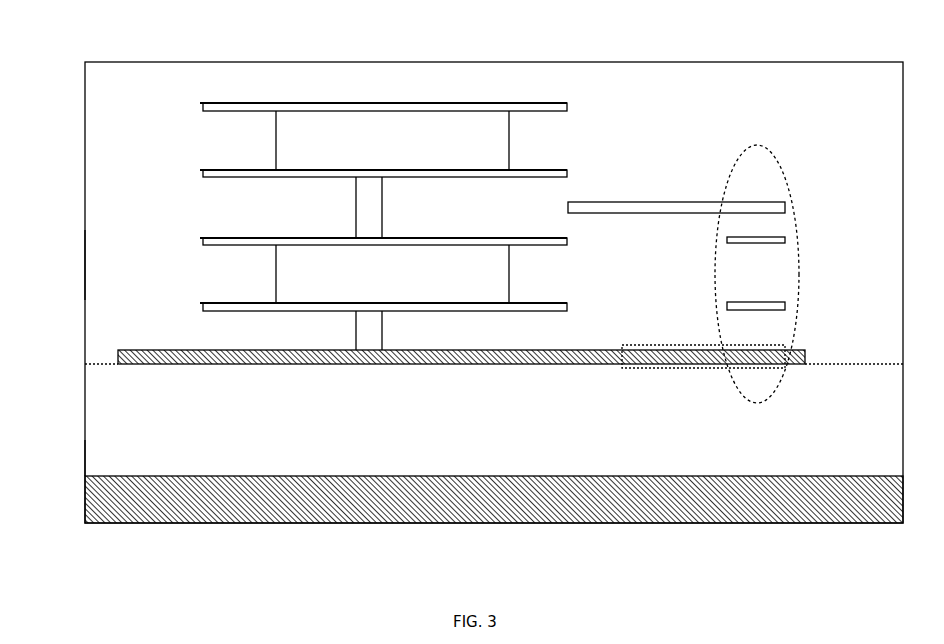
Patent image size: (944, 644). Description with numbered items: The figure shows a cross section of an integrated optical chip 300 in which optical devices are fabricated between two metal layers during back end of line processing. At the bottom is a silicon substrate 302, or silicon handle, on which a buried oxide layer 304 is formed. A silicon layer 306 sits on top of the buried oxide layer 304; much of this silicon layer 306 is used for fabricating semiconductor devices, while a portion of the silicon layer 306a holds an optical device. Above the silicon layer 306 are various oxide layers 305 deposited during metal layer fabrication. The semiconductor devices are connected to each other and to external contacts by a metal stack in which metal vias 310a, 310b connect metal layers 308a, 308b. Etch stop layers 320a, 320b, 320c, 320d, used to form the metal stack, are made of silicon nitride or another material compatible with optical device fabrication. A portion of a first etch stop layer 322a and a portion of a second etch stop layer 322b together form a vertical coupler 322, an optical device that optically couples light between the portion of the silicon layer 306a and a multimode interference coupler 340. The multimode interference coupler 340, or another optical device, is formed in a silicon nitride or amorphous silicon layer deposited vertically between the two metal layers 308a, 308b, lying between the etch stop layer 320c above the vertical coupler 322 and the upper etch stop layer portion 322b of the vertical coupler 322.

The integrated optical chip 300 is at (115, 62).
The silicon substrate 302 is at (90, 494).
The buried oxide layer 304 is at (90, 447).
The oxide layers 305 is at (95, 263).
The silicon layer 306 is at (150, 368).
The portion of the silicon layer 306a is at (680, 372).
The metal layer 308a is at (278, 271).
The metal layer 308b is at (278, 150).
The metal via 310a is at (362, 335).
The metal via 310b is at (362, 210).
The etch stop layer 320a is at (203, 305).
The etch stop layer 320b is at (203, 240).
The etch stop layer 320c is at (203, 172).
The etch stop layer 320d is at (203, 104).
The vertical coupler 322 is at (785, 176).
The portion of first etch stop layer 322a is at (788, 305).
The portion of second etch stop layer 322b is at (788, 238).
The multimode interference coupler 340 is at (665, 203).